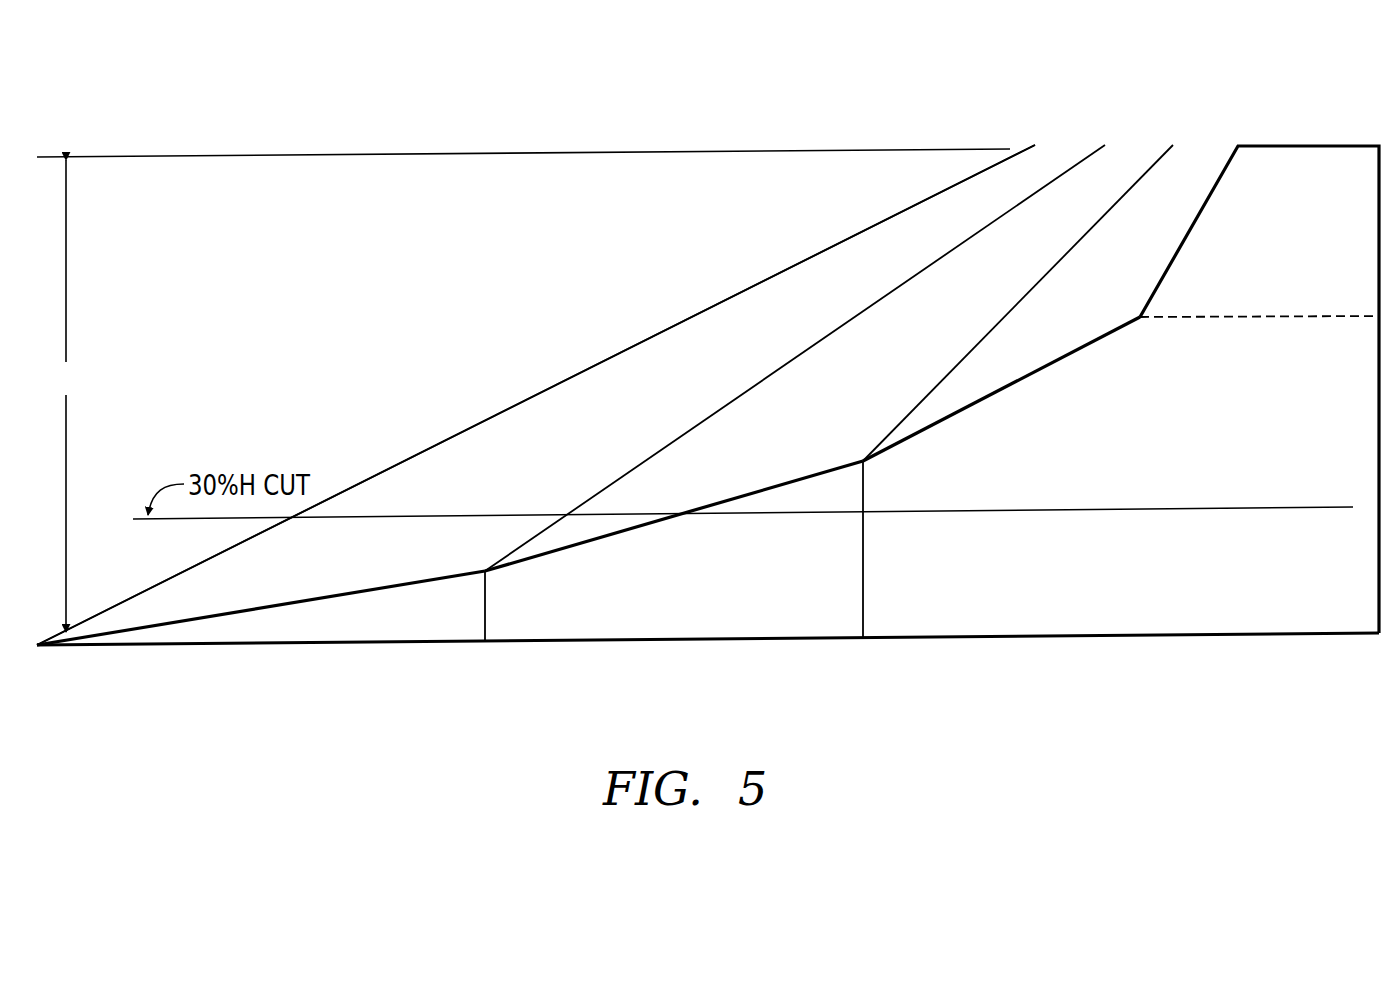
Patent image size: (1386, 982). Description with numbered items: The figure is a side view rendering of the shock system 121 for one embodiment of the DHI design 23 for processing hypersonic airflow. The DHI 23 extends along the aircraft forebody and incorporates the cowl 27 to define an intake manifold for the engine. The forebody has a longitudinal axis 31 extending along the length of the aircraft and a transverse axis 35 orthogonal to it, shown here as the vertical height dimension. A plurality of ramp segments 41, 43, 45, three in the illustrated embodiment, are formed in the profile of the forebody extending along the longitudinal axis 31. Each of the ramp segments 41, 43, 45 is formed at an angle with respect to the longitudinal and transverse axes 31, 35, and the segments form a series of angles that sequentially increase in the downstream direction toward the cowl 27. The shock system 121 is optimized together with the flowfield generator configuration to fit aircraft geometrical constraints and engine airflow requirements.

The DHI design 23 is at (431, 356).
The cowl 27 is at (1272, 252).
The longitudinal axis 31 is at (184, 157).
The transverse axis 35 is at (66, 332).
The ramp segment 41 is at (366, 612).
The ramp segment 43 is at (815, 493).
The ramp segment 45 is at (1111, 363).
The shock system 121 is at (647, 320).